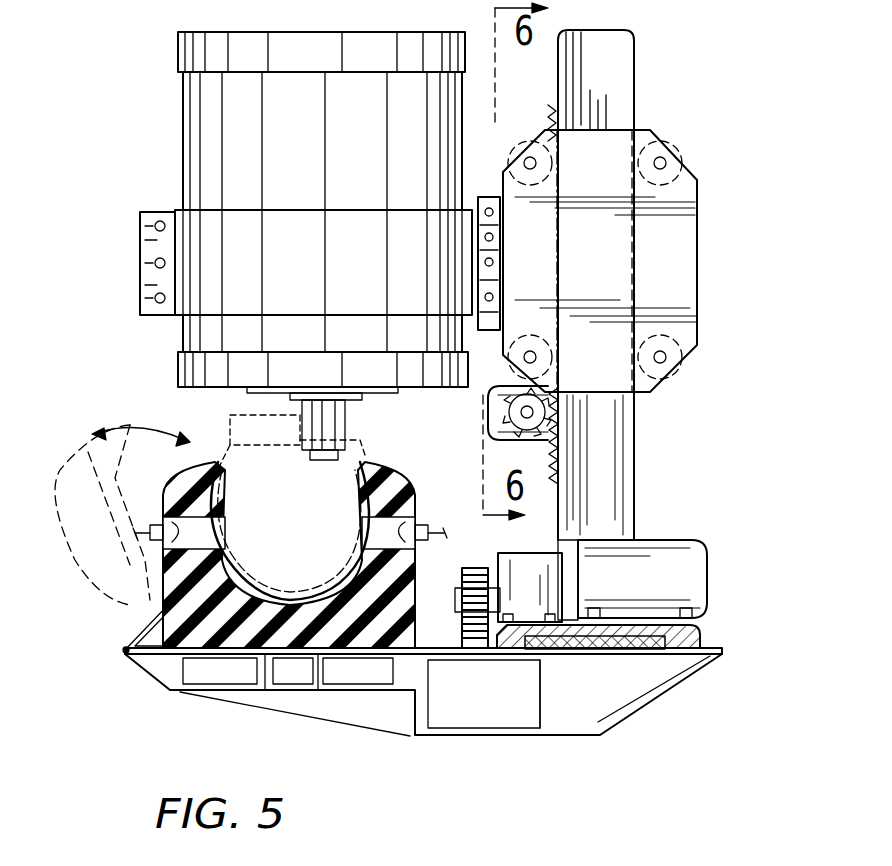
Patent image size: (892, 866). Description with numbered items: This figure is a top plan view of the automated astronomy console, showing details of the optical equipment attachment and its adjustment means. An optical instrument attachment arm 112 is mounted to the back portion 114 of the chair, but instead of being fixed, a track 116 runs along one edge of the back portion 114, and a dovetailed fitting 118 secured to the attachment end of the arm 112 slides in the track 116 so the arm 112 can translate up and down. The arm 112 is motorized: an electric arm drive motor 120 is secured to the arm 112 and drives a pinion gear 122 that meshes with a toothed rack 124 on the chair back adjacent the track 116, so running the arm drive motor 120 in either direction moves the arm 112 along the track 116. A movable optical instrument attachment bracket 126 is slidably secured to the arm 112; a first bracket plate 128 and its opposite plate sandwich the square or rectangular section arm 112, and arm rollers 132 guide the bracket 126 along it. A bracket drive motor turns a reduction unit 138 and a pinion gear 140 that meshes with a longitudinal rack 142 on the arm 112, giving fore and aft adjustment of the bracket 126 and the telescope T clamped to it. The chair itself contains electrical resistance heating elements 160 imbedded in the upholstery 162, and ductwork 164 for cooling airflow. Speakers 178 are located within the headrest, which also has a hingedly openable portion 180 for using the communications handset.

The telescope T is at (183, 140).
The optical instrument attachment arm 112 is at (638, 78).
The back portion of the chair 114 is at (405, 738).
The track 116 is at (560, 652).
The dovetailed fitting 118 is at (641, 656).
The arm drive motor 120 is at (705, 560).
The pinion gear 122 is at (478, 566).
The toothed rack 124 is at (470, 650).
The optical instrument attachment bracket 126 is at (650, 242).
The first bracket plate 128 is at (616, 279).
The arm rollers 132 is at (712, 130).
The reduction unit 138 is at (490, 400).
The pinion gear 140 is at (492, 440).
The longitudinal rack 142 is at (560, 470).
The electrical resistance heating elements 160 is at (270, 588).
The upholstery 162 is at (220, 600).
The ductwork 164 is at (258, 640).
The speakers 178 is at (162, 520).
The hingedly openable portion 180 is at (170, 592).